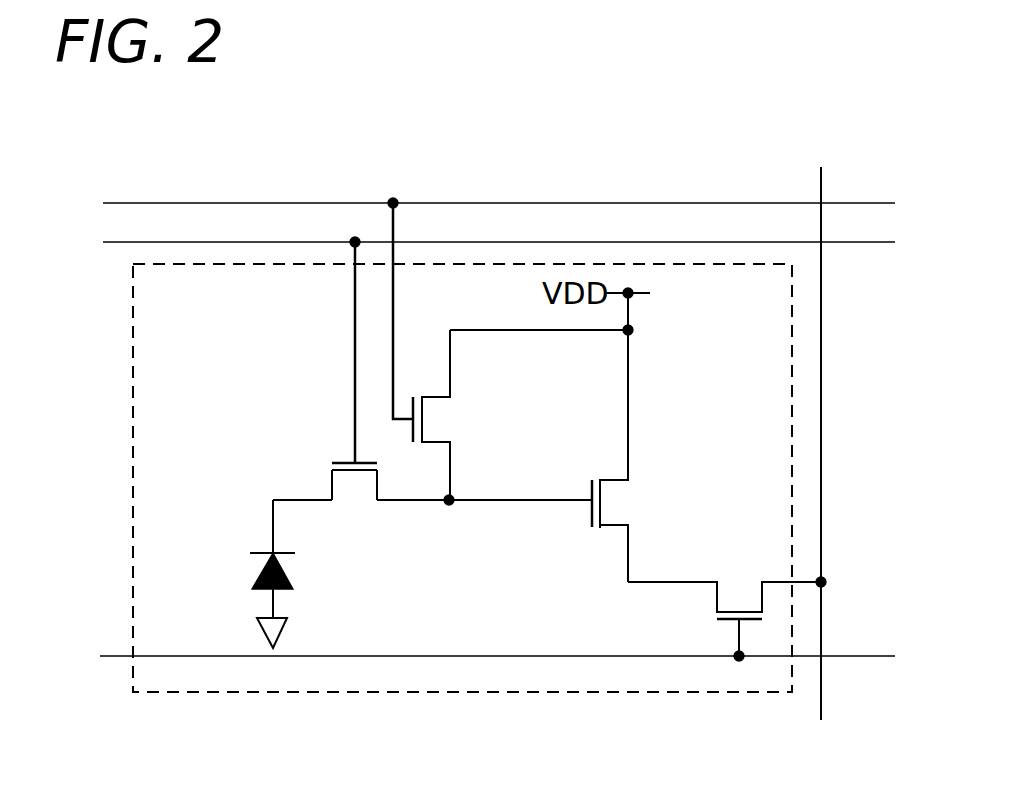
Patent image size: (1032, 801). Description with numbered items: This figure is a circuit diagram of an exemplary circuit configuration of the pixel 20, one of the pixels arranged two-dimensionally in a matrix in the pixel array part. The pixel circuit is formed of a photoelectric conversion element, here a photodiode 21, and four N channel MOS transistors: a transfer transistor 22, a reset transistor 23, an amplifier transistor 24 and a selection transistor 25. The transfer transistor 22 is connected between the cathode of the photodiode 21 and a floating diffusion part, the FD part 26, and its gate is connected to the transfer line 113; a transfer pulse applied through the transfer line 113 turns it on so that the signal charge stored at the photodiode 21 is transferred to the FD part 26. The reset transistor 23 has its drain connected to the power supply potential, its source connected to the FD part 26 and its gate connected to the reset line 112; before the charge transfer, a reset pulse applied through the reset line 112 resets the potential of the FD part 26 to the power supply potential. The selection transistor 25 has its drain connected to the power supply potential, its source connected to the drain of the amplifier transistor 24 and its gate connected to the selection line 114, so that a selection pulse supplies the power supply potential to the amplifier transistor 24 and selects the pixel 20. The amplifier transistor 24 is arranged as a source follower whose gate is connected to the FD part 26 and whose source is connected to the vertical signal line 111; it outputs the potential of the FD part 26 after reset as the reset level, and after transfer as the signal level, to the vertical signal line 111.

The pixel 20 is at (365, 692).
The photodiode 21 is at (253, 570).
The transfer transistor 22 is at (352, 483).
The reset transistor 23 is at (440, 418).
The amplifier transistor 24 is at (618, 502).
The selection transistor 25 is at (735, 597).
The floating diffusion part 26 is at (449, 505).
The vertical signal line 111 is at (821, 405).
The reset line 112 is at (850, 203).
The transfer line 113 is at (850, 242).
The selection line 114 is at (850, 656).